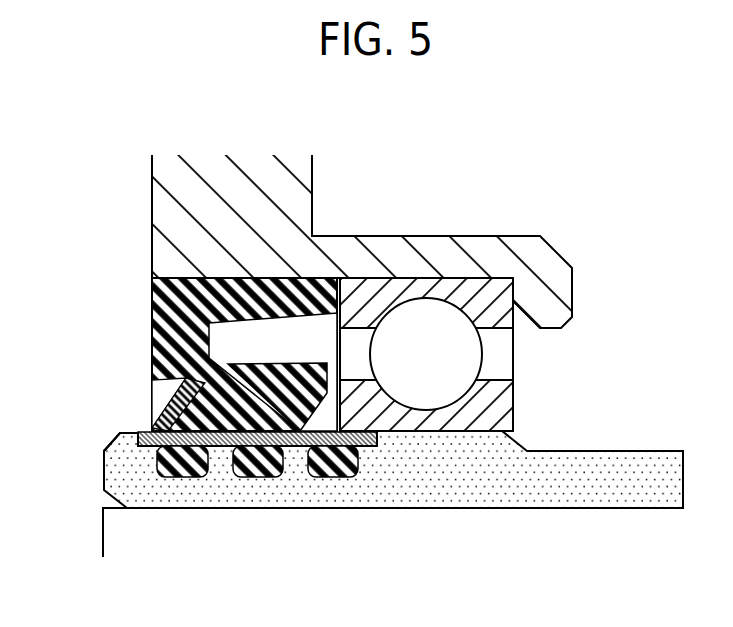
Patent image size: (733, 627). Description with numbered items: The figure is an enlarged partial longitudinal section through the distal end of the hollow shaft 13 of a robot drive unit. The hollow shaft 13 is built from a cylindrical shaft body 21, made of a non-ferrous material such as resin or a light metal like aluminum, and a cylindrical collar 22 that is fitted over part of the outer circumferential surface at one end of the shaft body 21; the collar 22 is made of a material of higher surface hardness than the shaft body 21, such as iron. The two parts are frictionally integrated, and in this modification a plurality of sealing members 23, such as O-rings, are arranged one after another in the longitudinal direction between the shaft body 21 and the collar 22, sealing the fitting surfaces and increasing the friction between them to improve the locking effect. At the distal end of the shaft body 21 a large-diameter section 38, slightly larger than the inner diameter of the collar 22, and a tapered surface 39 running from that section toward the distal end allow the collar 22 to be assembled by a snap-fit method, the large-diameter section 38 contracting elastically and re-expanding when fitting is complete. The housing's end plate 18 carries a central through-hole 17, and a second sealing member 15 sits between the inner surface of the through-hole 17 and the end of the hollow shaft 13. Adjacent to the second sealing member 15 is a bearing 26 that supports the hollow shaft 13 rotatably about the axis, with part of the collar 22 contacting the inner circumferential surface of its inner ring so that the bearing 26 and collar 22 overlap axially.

The hollow shaft 13 is at (648, 520).
The second sealing member 15 is at (185, 376).
The through-hole 17 is at (193, 280).
The end plate 18 is at (152, 189).
The shaft body 21 is at (582, 509).
The collar 22 is at (295, 447).
The sealing member 23 is at (185, 467).
The bearing 26 is at (433, 425).
The large-diameter section 38 is at (128, 433).
The tapered surface 39 is at (116, 437).